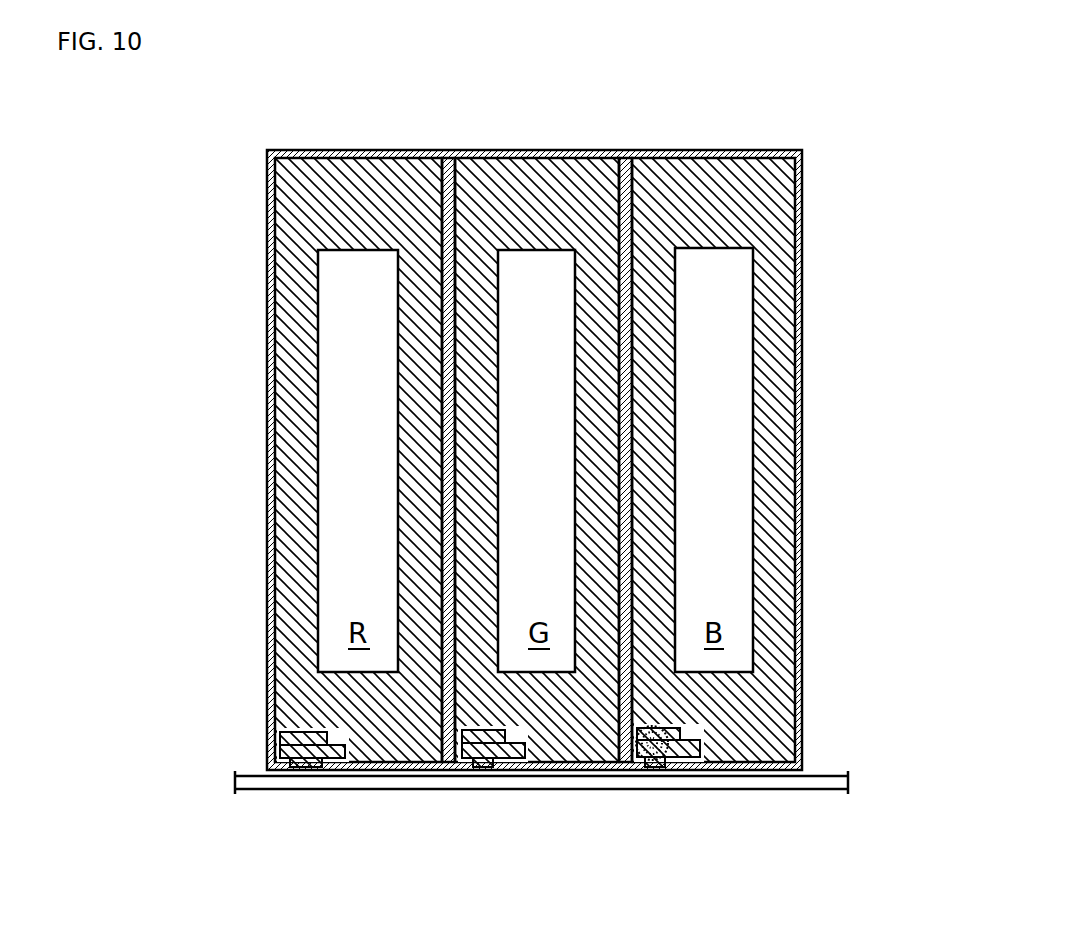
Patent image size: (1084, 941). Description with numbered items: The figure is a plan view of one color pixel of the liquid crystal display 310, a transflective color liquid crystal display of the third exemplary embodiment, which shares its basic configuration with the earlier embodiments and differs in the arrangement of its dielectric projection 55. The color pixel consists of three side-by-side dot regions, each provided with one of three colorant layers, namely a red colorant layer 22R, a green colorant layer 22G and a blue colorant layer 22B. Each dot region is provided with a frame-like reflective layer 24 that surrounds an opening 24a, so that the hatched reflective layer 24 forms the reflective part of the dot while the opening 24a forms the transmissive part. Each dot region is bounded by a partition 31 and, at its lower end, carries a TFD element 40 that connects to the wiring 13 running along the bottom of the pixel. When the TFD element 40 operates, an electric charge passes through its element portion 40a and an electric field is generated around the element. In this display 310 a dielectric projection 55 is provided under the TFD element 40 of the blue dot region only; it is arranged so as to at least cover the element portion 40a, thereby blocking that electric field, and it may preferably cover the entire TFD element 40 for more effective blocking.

The liquid crystal display 310 is at (862, 232).
The red colorant layer 22R is at (353, 150).
The green colorant layer 22G is at (575, 150).
The blue colorant layer 22B is at (778, 150).
The reflective layer 24 is at (275, 212).
The opening 24a is at (333, 409).
The partition wall 31 is at (270, 565).
The TFD element 40 is at (330, 786).
The element portion 40a is at (298, 767).
The dielectric projection 55 is at (651, 737).
The wiring line 13 is at (818, 789).